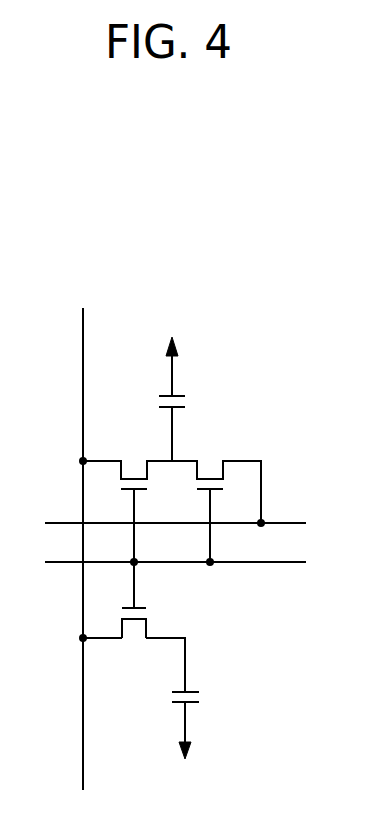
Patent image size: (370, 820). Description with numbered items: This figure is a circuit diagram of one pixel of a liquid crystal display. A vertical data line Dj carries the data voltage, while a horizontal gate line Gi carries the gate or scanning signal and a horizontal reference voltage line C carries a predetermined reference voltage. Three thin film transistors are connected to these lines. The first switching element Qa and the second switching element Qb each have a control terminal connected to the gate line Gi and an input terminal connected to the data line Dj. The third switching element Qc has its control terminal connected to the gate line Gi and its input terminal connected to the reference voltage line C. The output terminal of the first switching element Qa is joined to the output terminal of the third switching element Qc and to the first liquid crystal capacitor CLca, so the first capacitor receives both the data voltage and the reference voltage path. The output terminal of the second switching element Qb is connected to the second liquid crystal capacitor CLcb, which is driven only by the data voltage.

The data line Dj is at (81, 529).
The reference voltage line C is at (163, 524).
The gate line Gi is at (163, 563).
The first switching element Qa is at (126, 518).
The third switching element Qc is at (218, 496).
The second switching element Qb is at (132, 650).
The first liquid crystal capacitor CLca is at (198, 399).
The second liquid crystal capacitor CLcb is at (211, 721).